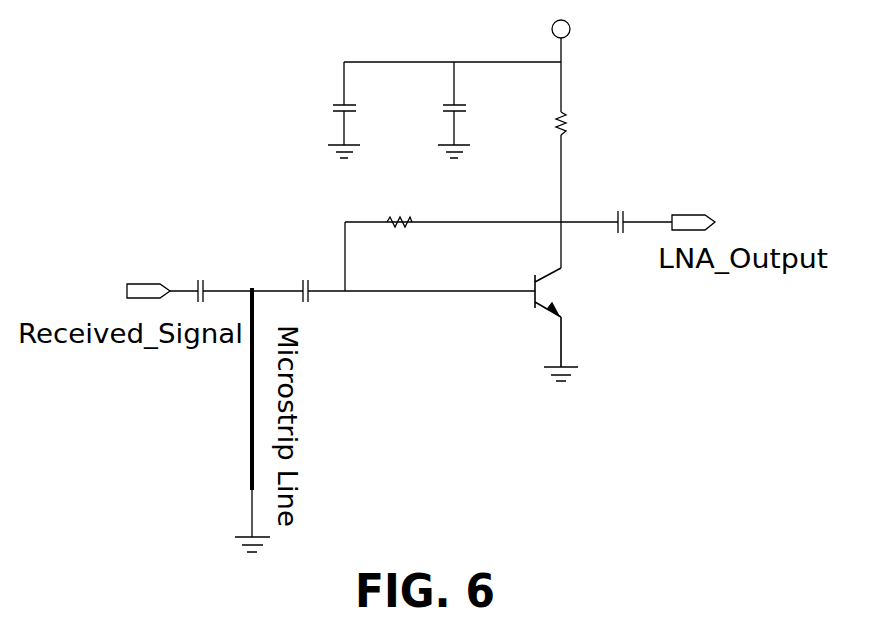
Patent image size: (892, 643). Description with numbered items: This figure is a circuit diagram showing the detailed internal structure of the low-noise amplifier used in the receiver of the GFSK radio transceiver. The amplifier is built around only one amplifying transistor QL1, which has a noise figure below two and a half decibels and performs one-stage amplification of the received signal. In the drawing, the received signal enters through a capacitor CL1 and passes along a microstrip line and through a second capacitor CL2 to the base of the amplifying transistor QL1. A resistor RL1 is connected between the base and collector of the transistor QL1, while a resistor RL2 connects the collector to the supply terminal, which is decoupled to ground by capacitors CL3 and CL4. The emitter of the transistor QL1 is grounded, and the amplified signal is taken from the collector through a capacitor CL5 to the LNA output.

The input coupling capacitor CL1 is at (201, 274).
The coupling capacitor CL2 is at (301, 274).
The supply bypass capacitor CL3 is at (423, 110).
The supply bypass capacitor CL4 is at (312, 110).
The output coupling capacitor CL5 is at (616, 203).
The feedback resistor RL1 is at (391, 206).
The load resistor RL2 is at (531, 125).
The amplifying transistor QL1 is at (573, 324).